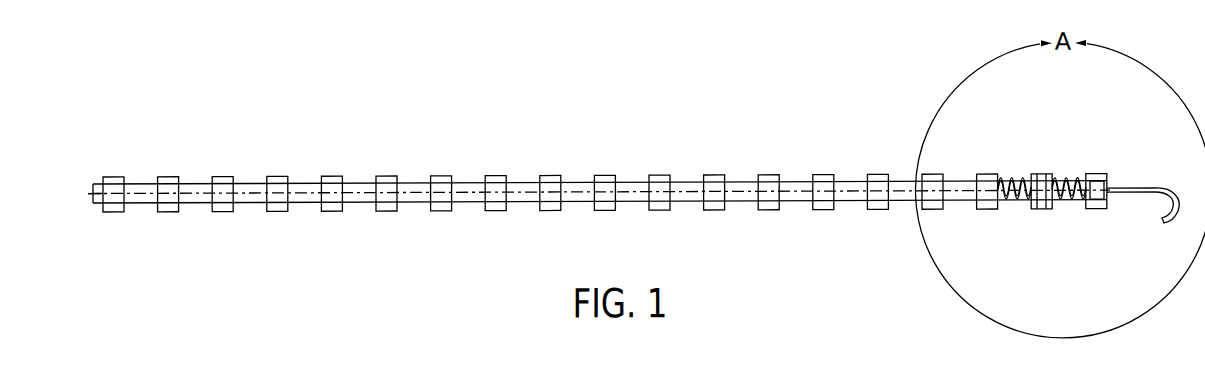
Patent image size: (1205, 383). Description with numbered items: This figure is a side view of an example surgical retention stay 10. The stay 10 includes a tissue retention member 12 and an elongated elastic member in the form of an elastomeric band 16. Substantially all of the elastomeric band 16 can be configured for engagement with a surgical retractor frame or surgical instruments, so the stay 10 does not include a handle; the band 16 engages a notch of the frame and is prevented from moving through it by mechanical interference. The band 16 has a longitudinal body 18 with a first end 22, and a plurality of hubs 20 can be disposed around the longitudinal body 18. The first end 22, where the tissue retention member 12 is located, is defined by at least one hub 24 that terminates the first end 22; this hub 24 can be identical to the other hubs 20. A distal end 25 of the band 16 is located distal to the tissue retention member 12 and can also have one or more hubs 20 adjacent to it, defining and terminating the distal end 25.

The stay 10 is at (362, 89).
The tissue retention member 12 is at (1180, 125).
The elastomeric band 16 is at (754, 156).
The longitudinal body 18 is at (526, 184).
The hubs 20 is at (113, 212).
The first end 22 is at (1085, 242).
The hub 24 is at (1103, 177).
The distal end 25 is at (124, 149).